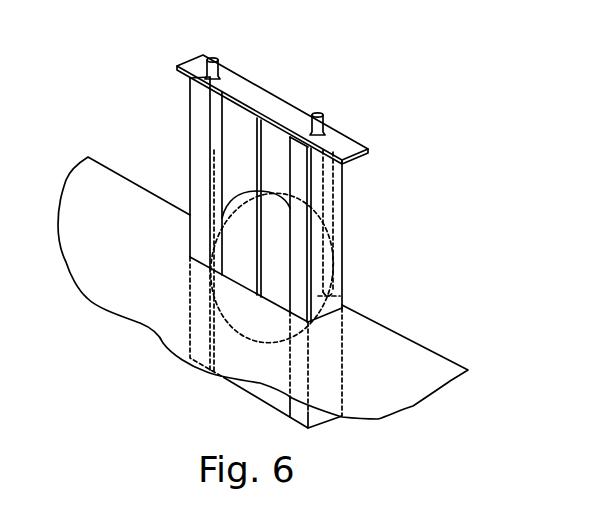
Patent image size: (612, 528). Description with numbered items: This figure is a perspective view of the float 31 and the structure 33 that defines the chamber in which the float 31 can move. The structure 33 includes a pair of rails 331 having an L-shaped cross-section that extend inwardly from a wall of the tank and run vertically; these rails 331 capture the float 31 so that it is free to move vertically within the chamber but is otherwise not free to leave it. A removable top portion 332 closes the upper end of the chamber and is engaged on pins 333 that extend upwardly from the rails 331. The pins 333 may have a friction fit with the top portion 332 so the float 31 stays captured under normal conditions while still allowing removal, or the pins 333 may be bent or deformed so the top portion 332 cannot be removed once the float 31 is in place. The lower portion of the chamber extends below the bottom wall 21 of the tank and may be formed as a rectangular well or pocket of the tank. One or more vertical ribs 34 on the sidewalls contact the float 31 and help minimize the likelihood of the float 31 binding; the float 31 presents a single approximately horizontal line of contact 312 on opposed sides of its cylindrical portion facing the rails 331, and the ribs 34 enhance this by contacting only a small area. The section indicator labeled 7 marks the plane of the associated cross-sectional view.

The bottom wall 21 is at (416, 409).
The float 31 is at (271, 278).
The horizontal line of contact 312 is at (330, 292).
The structure 33 is at (258, 196).
The rails 331 is at (193, 122).
The top portion 332 is at (252, 92).
The pins 333 is at (212, 57).
The vertical ribs 34 is at (260, 153).
The section line 7- 7 is at (138, 210).